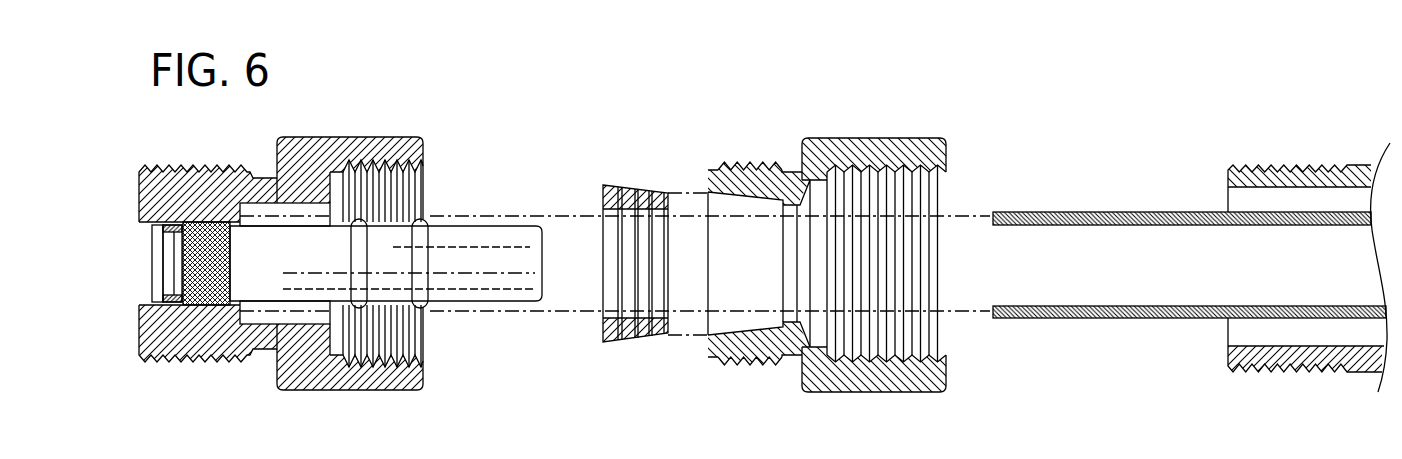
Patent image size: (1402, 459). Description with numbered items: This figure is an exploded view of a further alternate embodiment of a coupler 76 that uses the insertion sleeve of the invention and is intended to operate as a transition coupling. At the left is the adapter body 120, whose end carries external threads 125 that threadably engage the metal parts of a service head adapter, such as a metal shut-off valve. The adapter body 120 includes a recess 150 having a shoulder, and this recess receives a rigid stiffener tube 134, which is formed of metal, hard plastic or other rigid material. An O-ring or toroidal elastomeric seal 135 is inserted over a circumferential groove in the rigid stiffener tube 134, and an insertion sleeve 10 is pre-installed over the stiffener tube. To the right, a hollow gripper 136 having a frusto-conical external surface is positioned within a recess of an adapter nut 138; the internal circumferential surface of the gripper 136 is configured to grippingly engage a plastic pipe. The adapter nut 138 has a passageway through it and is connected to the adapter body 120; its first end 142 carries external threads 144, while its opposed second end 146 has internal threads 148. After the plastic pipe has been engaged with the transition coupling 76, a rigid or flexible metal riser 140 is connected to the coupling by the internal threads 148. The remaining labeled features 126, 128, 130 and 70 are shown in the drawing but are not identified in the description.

The insertion sleeve 10 is at (500, 214).
The coupler 76 is at (496, 106).
The adapter body 120 is at (283, 137).
The external threads 125 is at (168, 168).
The outer surface of body 126 is at (427, 133).
The internal threads of body 128 is at (397, 170).
The insulator washer 130 is at (162, 248).
The rigid stiffener tube 134 is at (297, 273).
The toroidal elastomeric seal 135 is at (423, 250).
The recess 150 is at (243, 290).
The hollow gripper 136 is at (625, 187).
The first end 142 is at (705, 346).
The external threads 144 is at (758, 367).
The adapter nut 138 is at (832, 145).
The second end 146 is at (947, 373).
The internal threads 148 is at (915, 190).
The metal riser 140 is at (1367, 162).
The fitting 70 is at (787, 453).